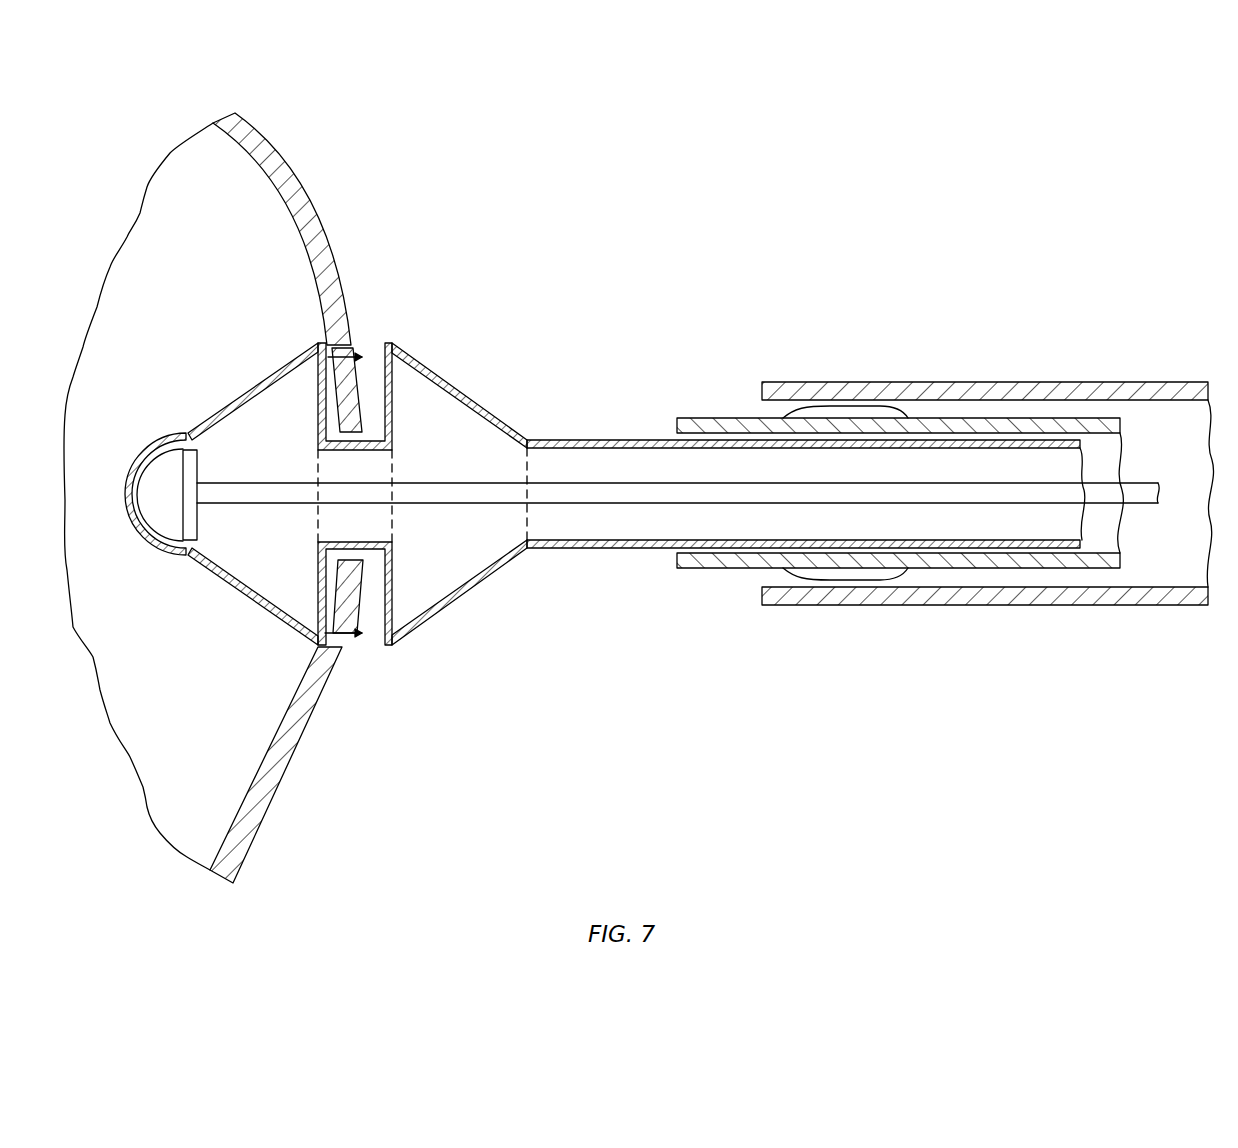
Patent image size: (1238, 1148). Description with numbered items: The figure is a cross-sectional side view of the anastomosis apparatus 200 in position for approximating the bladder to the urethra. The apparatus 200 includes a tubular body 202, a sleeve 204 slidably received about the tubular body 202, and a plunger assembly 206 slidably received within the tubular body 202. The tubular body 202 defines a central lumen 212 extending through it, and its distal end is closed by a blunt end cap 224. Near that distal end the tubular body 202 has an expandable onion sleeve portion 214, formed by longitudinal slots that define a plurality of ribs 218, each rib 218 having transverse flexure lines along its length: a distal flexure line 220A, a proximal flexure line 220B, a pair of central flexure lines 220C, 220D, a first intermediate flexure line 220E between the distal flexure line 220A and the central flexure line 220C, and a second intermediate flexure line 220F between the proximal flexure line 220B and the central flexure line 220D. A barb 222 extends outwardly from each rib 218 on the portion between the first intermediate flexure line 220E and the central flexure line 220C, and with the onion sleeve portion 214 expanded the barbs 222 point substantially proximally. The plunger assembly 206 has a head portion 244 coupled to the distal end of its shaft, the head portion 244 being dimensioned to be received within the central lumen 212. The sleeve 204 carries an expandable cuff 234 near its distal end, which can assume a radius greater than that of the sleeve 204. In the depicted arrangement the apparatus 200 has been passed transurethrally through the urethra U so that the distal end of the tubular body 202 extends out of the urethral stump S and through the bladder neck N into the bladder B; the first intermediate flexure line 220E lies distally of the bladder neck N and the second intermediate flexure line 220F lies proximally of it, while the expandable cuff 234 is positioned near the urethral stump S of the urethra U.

The anastomosis apparatus 200 is at (647, 428).
The tubular body 202 is at (643, 440).
The sleeve 204 is at (1007, 418).
The plunger assembly 206 is at (1050, 493).
The central lumen 212 is at (1068, 470).
The onion sleeve portion 214 is at (92, 492).
The ribs 218 is at (382, 383).
The distal flexure line 220A is at (193, 551).
The proximal flexure line 220B is at (526, 548).
The central flexure line 220C is at (323, 543).
The central flexure line 220D is at (390, 542).
The first intermediate flexure line 220E is at (327, 343).
The second intermediate flexure line 220F is at (393, 343).
The barb 222 is at (330, 642).
The blunt end cap 224 is at (132, 530).
The expandable cuff 234 is at (847, 578).
The head portion 244 is at (157, 466).
The bladder B is at (240, 136).
The bladder neck N is at (332, 321).
The urethral stump S is at (795, 384).
The urethra U is at (1183, 388).